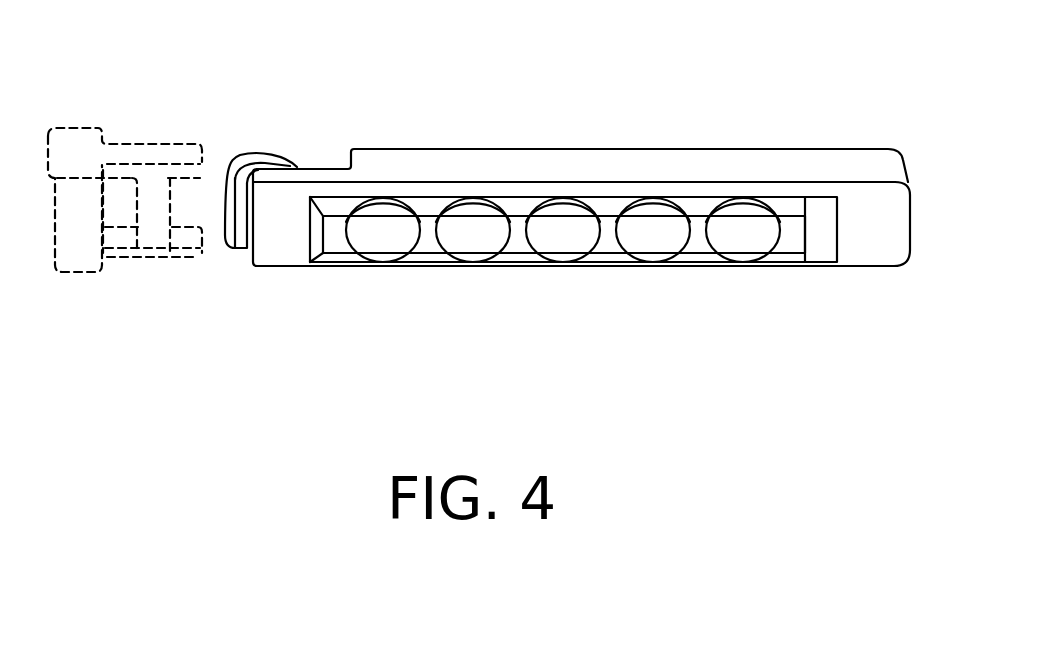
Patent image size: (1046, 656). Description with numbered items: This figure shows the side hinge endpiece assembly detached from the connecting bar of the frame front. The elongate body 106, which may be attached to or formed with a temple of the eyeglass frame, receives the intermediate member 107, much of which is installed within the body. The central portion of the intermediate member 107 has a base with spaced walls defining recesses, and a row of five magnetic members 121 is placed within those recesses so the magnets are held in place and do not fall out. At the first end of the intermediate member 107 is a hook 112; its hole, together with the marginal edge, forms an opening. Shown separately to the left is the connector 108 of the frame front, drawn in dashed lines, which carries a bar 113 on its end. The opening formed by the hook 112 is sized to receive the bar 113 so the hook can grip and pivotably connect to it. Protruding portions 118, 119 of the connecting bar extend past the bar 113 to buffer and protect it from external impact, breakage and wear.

The elongate body 106 is at (850, 160).
The intermediate member 107 is at (799, 208).
The connector 108 is at (73, 207).
The hook 112 is at (238, 165).
The bar 113 is at (148, 182).
The protruding portion 118 is at (200, 232).
The protruding portion 119 is at (188, 143).
The magnetic members 121 is at (753, 235).